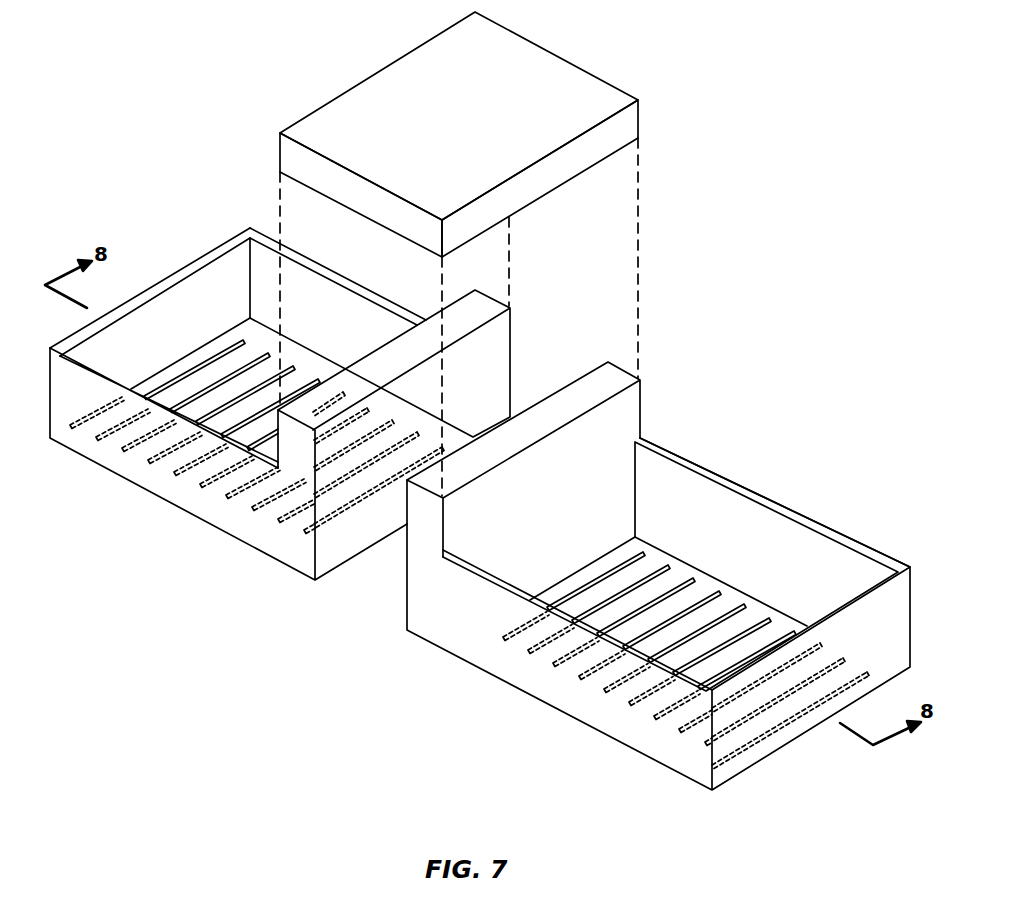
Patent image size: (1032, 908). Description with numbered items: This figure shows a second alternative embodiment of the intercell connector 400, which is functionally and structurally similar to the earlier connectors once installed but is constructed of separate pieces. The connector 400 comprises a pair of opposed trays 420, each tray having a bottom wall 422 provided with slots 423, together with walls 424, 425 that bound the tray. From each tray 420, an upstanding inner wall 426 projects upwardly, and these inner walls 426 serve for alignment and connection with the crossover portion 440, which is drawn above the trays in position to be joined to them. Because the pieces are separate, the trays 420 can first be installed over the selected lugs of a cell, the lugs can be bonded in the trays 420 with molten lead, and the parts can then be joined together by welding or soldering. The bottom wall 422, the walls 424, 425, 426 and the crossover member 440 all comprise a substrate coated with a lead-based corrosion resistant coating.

The intercell connector 400 is at (571, 292).
The opposed trays 420 is at (475, 540).
The bottom wall 422 is at (220, 441).
The slots 423 is at (734, 600).
The wall 424 is at (326, 245).
The wall 425 is at (150, 275).
The upstanding inner wall 426 is at (570, 459).
The crossover portion 440 is at (459, 133).